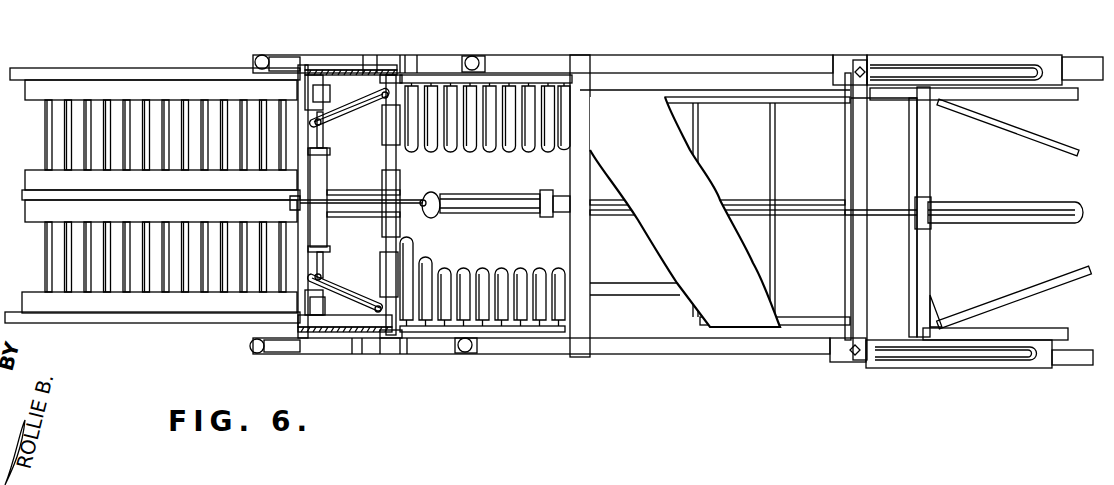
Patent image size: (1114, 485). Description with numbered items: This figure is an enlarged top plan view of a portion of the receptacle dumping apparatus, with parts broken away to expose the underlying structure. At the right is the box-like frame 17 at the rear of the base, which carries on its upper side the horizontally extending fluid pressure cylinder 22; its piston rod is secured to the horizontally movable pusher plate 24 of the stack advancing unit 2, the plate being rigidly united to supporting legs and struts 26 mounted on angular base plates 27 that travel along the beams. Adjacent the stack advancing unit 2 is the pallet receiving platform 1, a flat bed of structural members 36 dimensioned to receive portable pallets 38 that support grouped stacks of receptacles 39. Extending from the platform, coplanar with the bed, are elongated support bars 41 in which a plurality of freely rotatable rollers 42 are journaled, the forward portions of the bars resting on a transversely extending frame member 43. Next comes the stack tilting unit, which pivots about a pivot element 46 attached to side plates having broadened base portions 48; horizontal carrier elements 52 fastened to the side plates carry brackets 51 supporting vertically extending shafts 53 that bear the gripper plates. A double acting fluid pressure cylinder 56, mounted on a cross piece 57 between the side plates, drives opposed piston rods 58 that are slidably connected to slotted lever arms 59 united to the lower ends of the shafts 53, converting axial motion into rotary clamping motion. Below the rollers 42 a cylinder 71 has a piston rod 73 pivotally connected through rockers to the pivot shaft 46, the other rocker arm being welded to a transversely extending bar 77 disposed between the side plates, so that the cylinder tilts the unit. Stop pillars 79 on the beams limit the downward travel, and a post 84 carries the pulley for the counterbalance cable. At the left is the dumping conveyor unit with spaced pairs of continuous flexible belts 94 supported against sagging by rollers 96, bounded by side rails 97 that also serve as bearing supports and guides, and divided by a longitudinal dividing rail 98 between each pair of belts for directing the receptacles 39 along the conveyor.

The pallet receiving platform 1 is at (890, 104).
The stack advancing unit 2 is at (884, 40).
The box-like frame 17 is at (932, 162).
The fluid pressure cylinder 22 is at (1010, 203).
The pusher plate 24 is at (862, 266).
The supporting legs and struts 26 is at (890, 368).
The base plates 27 is at (968, 368).
The structural members 36 is at (610, 283).
The portable pallets 38 is at (697, 252).
The receptacles 39 is at (808, 257).
The support bars 41 is at (540, 332).
The rollers 42 is at (514, 270).
The frame member 43 is at (412, 155).
The pivot element 46 is at (385, 153).
The base portion of side plate 48 is at (305, 68).
The brackets 51 is at (396, 75).
The carrier elements 52 is at (321, 65).
The shafts 53 is at (386, 91).
The double acting fluid pressure cylinder 56 is at (325, 220).
The cross piece 57 is at (330, 95).
The piston rods 58 is at (323, 135).
The slotted lever arms 59 is at (338, 122).
The cylinder 71 is at (501, 196).
The piston rod 73 is at (406, 200).
The transversely extending bar 77 is at (300, 237).
The stop pillars 79 is at (261, 55).
The post 84 is at (478, 58).
The conveyor belts 94 is at (113, 82).
The rollers 96 is at (292, 205).
The side rails 97 is at (150, 70).
The dividing rail 98 is at (178, 195).